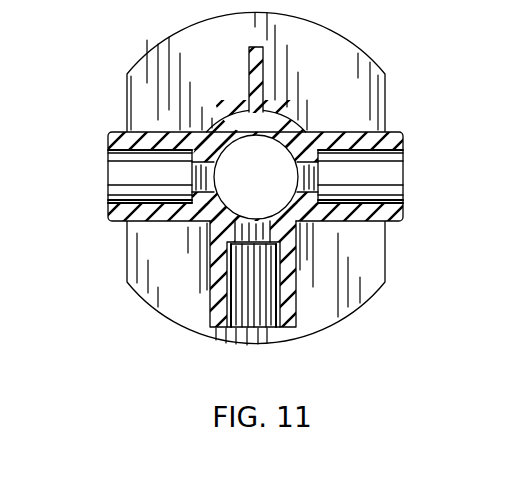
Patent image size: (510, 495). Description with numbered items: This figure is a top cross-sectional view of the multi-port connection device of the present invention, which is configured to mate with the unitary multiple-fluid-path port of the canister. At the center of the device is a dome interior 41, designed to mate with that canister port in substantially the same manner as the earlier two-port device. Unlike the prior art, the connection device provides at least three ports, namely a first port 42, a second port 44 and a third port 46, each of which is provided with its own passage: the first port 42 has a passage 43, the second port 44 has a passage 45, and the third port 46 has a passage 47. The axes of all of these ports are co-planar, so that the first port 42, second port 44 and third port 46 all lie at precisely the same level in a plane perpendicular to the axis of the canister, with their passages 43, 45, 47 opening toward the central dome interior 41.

The dome interior 41 is at (268, 187).
The first port 42 is at (118, 132).
The passage 43 is at (124, 176).
The second port 44 is at (210, 322).
The passage 45 is at (252, 340).
The third port 46 is at (392, 133).
The passage 47 is at (373, 180).